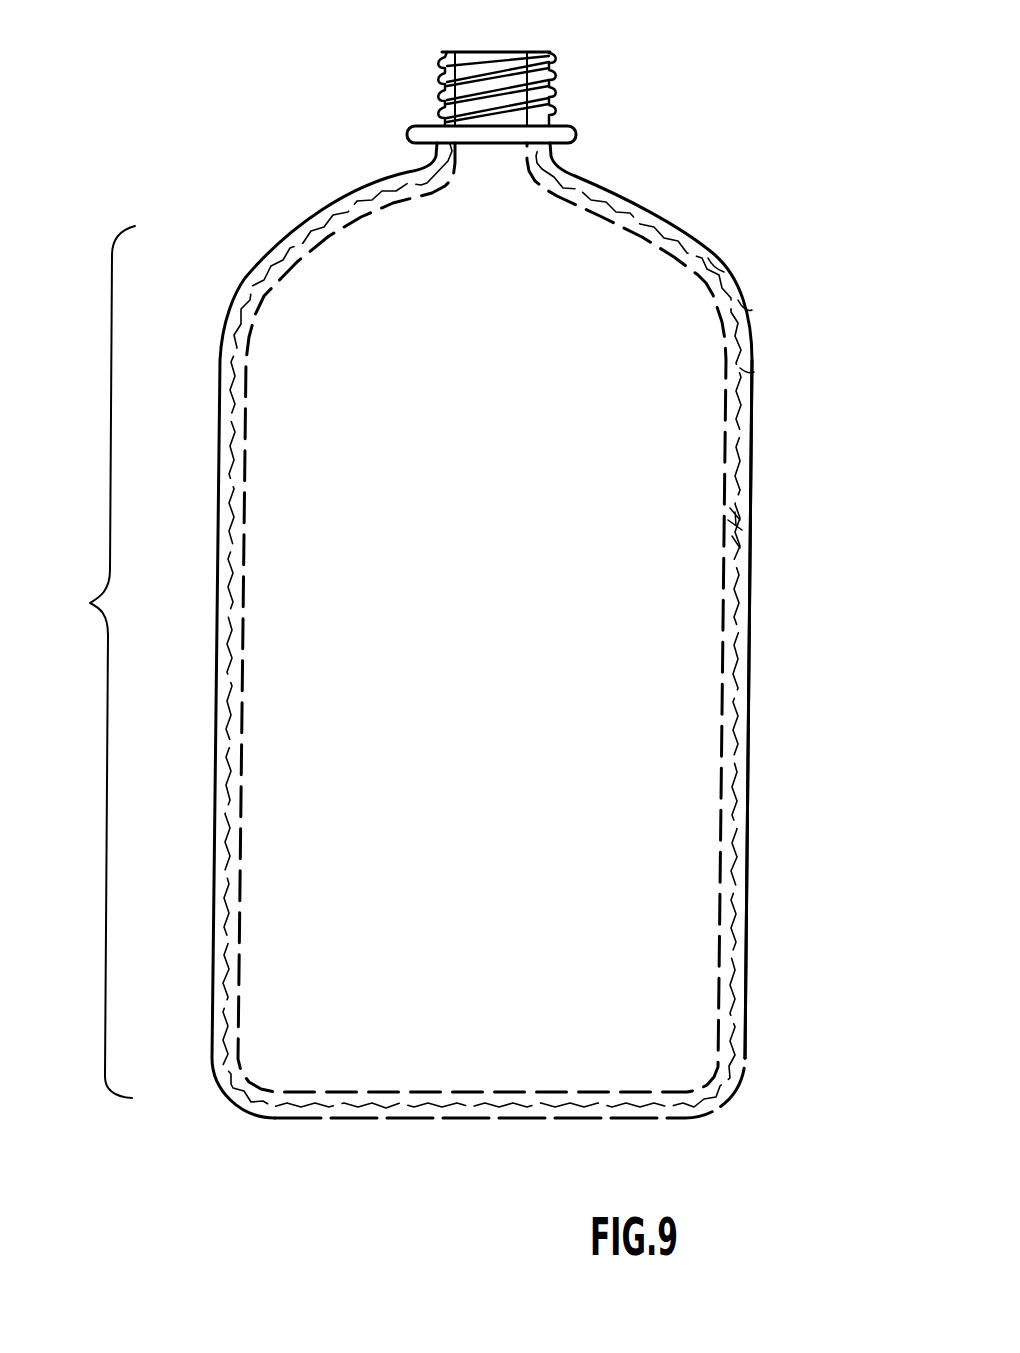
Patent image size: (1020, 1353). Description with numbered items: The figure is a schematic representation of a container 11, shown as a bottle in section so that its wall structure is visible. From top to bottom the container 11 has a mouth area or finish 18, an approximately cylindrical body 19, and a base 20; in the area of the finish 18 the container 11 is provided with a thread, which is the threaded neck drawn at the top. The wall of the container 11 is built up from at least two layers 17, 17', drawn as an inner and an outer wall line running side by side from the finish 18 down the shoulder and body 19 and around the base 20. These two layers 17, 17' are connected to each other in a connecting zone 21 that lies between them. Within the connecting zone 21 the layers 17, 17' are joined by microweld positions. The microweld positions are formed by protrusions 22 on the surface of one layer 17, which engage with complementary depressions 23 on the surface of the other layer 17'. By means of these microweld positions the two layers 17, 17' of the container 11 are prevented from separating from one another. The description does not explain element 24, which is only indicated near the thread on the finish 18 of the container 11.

The container 11 is at (247, 185).
The layer 17 is at (482, 617).
The layer 17' is at (784, 709).
The finish 18 is at (613, 50).
The body 19 is at (90, 600).
The base 20 is at (738, 1112).
The connecting zone 21 is at (745, 528).
The protrusions 22 is at (752, 310).
The depressions 23 is at (715, 265).
The thread 24 is at (437, 63).